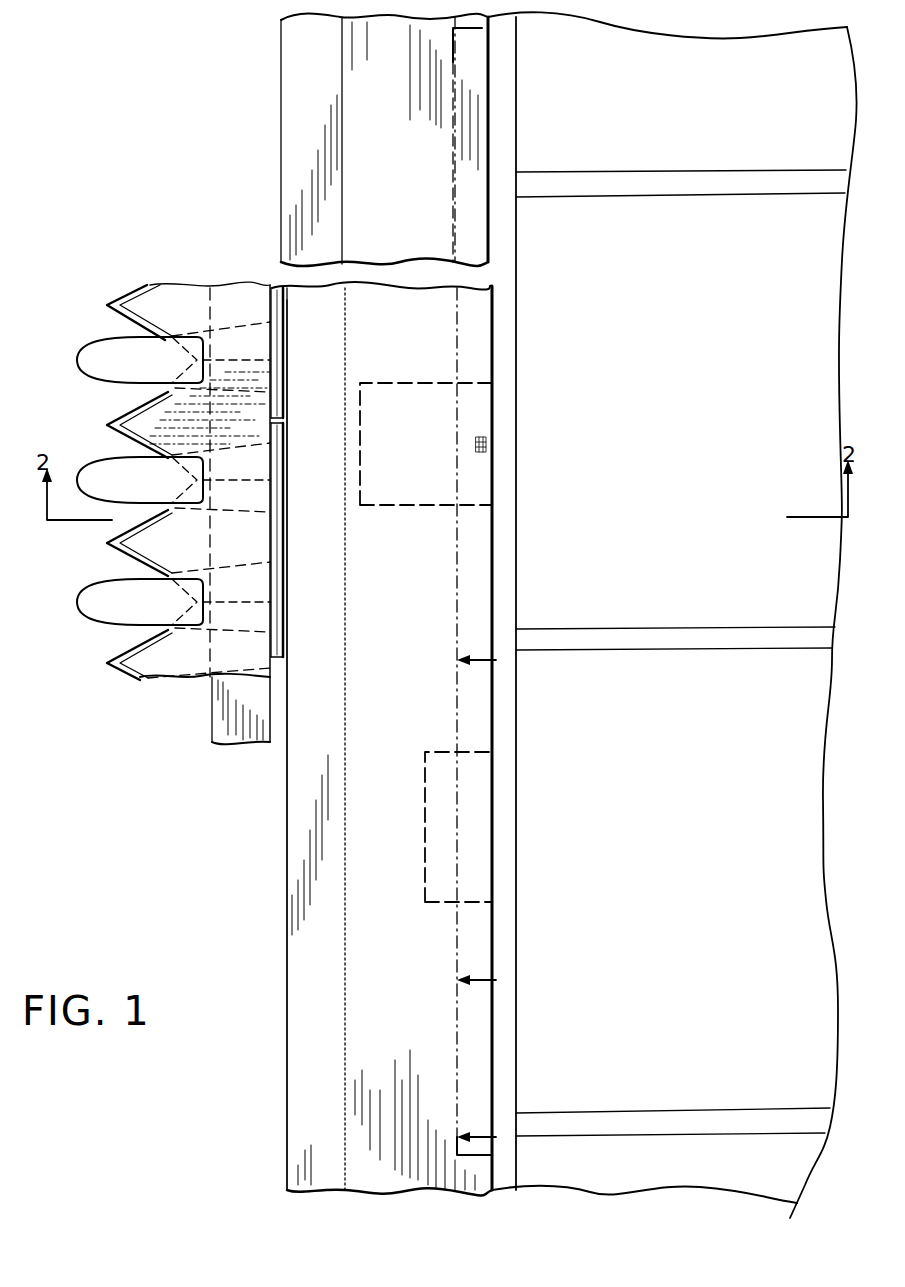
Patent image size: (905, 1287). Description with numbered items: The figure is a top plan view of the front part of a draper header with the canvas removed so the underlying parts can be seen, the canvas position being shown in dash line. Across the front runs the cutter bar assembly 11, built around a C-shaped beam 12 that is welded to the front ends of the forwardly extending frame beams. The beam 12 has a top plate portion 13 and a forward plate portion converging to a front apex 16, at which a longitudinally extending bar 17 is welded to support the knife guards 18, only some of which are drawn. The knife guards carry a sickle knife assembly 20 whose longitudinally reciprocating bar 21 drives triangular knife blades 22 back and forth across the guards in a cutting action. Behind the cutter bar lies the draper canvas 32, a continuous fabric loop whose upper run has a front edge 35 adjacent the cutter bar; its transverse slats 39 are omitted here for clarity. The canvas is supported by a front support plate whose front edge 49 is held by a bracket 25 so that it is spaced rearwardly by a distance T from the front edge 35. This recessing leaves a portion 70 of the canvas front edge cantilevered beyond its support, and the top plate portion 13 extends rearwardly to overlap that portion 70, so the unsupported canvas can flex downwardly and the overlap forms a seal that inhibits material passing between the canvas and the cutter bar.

The cutter bar assembly 11 is at (356, 766).
The C-shaped beam 12 is at (390, 1168).
The top plate portion 13 is at (452, 1181).
The front apex 16 is at (343, 1150).
The longitudinally extending bar 17 is at (300, 948).
The knife guards 18 is at (128, 378).
The sickle knife assembly 20 is at (160, 534).
The longitudinally reciprocating bar 21 is at (220, 718).
The triangular knife blades 22 is at (145, 545).
The bracket 25 is at (417, 376).
The draper canvas 32 is at (448, 161).
The front edge of the upper run 35 is at (453, 225).
The transverse slats 39 is at (637, 642).
The front edge of the top plate portion 49 is at (492, 555).
The cantilevered portion 70 is at (490, 972).
The distance T is at (489, 668).